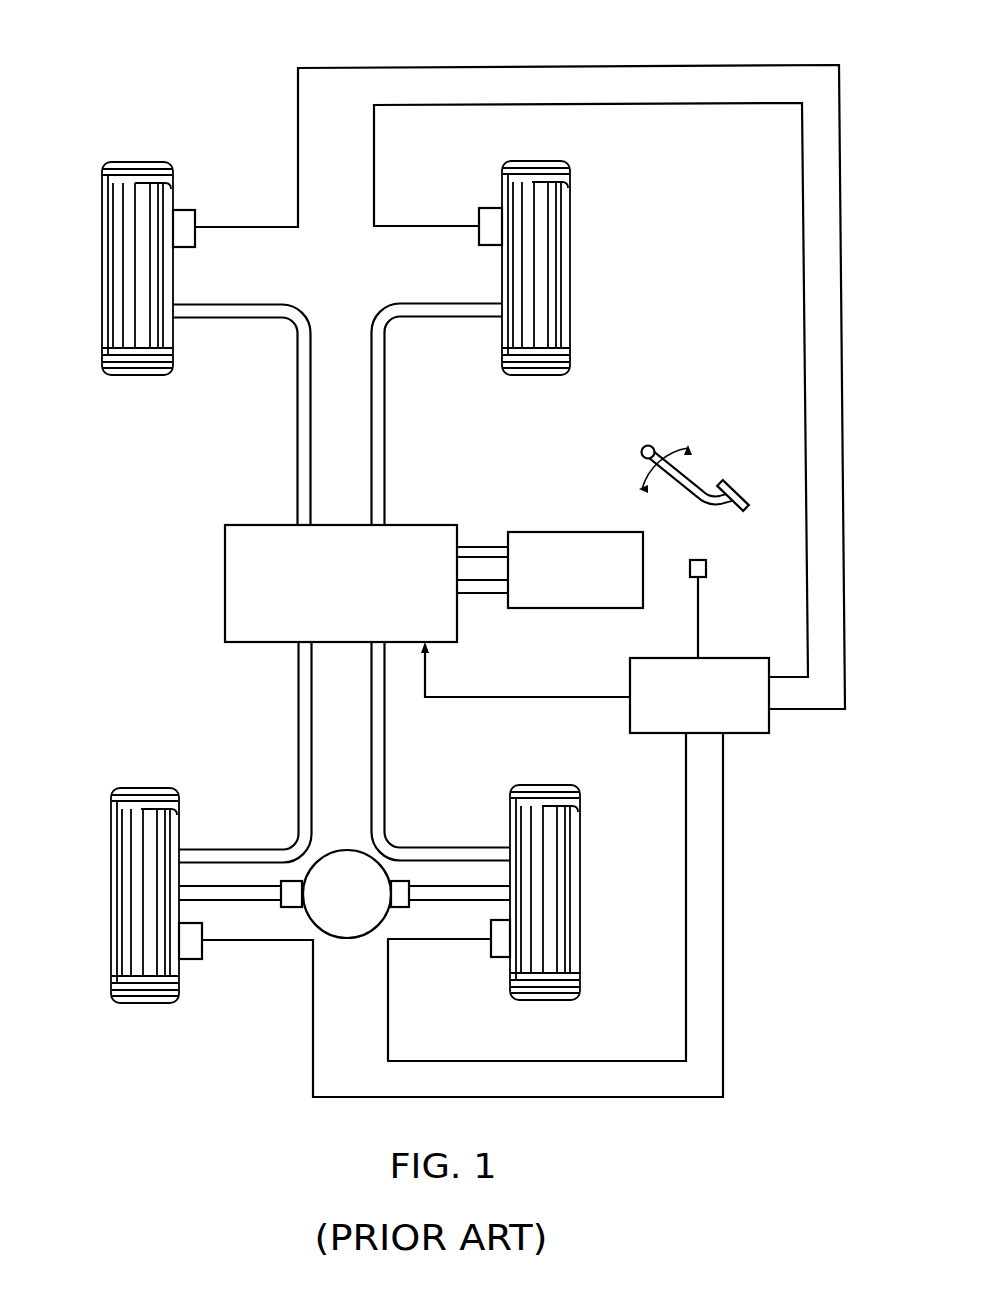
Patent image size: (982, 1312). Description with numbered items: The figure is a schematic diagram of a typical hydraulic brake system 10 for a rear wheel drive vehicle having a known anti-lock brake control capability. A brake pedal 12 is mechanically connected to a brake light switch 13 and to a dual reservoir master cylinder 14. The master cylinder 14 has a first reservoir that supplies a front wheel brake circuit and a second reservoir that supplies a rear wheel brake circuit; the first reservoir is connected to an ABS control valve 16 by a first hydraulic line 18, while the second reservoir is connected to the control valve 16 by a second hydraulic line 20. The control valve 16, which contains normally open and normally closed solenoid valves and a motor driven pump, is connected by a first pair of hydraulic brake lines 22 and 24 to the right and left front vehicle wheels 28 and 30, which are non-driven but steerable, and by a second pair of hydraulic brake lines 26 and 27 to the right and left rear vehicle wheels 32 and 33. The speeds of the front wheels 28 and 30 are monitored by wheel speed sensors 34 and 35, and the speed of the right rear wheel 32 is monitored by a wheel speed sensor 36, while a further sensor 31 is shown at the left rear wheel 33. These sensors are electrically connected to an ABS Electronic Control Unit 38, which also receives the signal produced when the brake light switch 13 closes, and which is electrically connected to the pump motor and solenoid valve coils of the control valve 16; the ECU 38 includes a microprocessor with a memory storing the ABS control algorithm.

The hydraulic brake system 10 is at (348, 50).
The brake pedal 12 is at (690, 487).
The brake light switch 13 is at (698, 560).
The dual reservoir master cylinder 14 is at (573, 532).
The ABS control valve 16 is at (225, 560).
The first hydraulic line 18 is at (483, 543).
The second hydraulic line 20 is at (490, 597).
The hydraulic brake line 22 is at (385, 402).
The hydraulic brake line 24 is at (297, 398).
The hydraulic brake line 26 is at (385, 742).
The hydraulic brake line 27 is at (299, 710).
The right front vehicle wheel 28 is at (570, 194).
The left front vehicle wheel 30 is at (142, 162).
The wheel speed sensor 31 is at (197, 959).
The right rear vehicle wheel 32 is at (580, 805).
The left rear vehicle wheel 33 is at (151, 788).
The wheel speed sensor 34 is at (484, 208).
The wheel speed sensor 35 is at (197, 210).
The wheel speed sensor 36 is at (497, 957).
The ABS Electronic Control Unit 38 is at (727, 658).